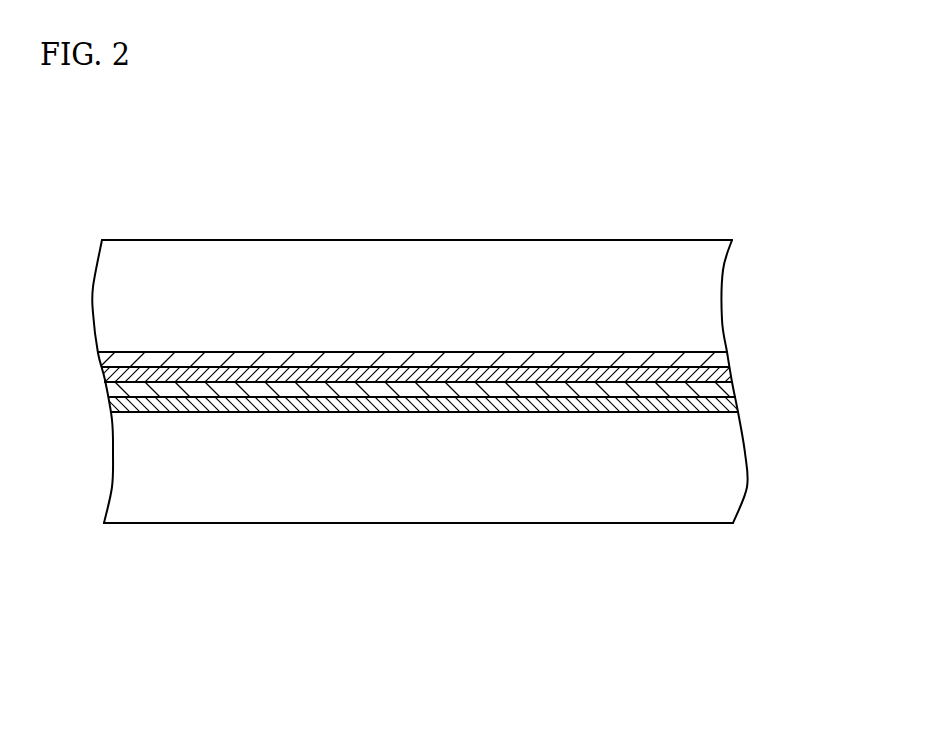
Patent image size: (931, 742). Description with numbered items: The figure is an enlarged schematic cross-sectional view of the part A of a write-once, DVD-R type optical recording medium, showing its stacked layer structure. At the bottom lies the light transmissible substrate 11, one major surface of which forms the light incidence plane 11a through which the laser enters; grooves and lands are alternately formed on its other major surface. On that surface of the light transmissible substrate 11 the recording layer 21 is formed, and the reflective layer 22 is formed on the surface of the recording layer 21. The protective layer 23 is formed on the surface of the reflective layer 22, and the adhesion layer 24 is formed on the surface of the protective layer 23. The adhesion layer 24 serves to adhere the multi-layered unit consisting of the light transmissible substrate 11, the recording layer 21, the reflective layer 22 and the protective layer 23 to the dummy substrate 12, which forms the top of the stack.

The part of the optical recording medium A is at (583, 210).
The light transmissible substrate 11 is at (727, 475).
The light incidence plane 11a is at (232, 523).
The dummy substrate 12 is at (703, 265).
The recording layer 21 is at (720, 402).
The reflective layer 22 is at (713, 389).
The protective layer 23 is at (715, 380).
The adhesion layer 24 is at (717, 362).